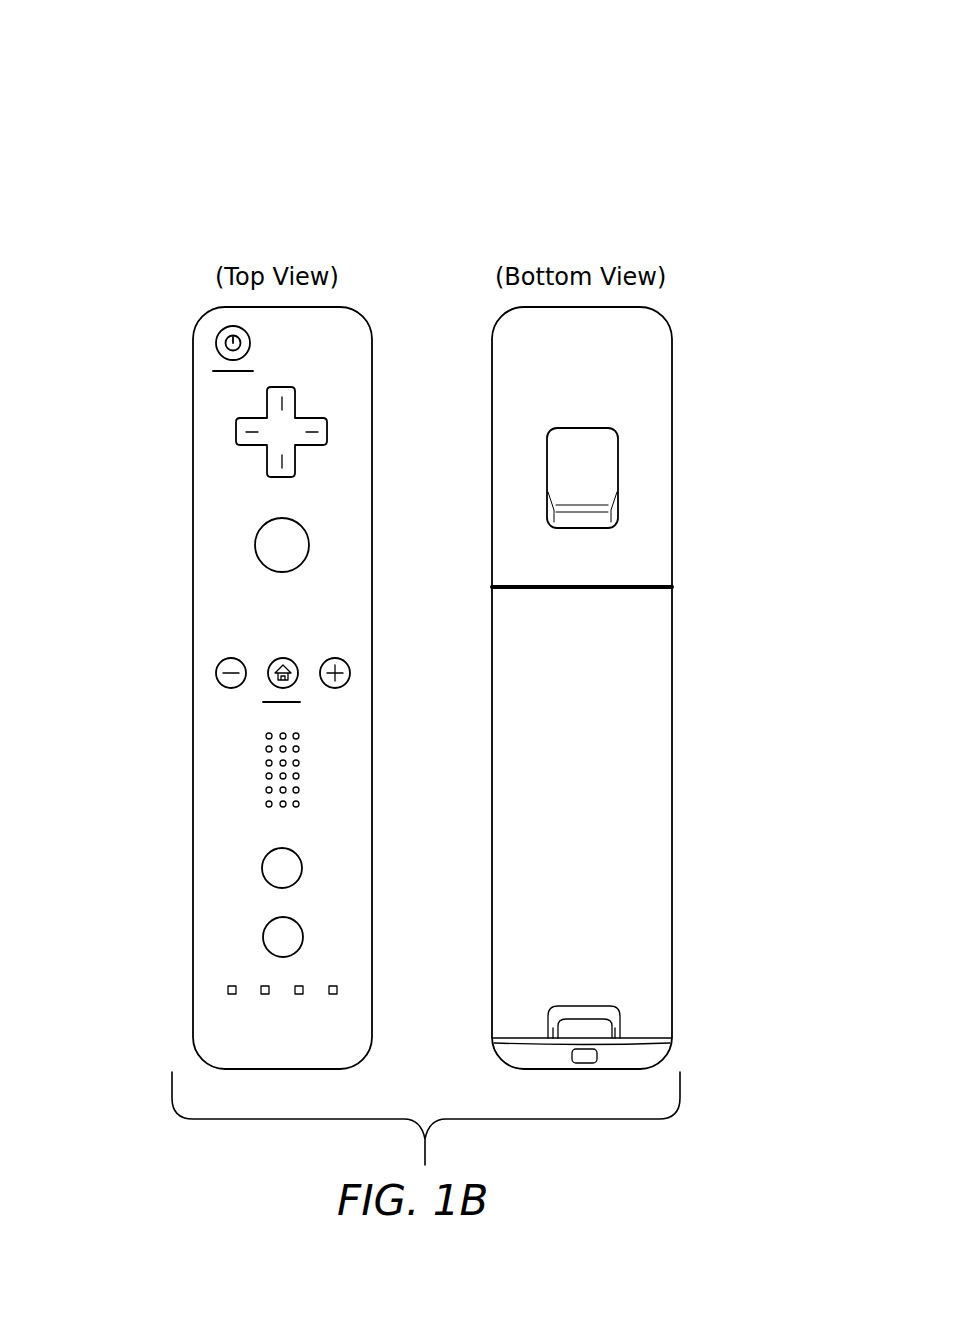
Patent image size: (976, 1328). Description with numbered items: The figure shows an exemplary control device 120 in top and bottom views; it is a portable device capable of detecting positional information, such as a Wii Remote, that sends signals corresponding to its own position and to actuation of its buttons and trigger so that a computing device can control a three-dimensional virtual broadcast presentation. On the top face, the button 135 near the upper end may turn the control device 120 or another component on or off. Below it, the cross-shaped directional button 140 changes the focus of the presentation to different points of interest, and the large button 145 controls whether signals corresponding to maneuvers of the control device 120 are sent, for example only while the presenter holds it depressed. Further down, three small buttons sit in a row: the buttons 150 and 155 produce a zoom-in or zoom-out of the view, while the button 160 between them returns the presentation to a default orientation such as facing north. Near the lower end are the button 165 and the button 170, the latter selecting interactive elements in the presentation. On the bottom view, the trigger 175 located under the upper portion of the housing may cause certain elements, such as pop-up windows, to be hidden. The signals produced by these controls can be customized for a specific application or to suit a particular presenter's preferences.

The control device 120 is at (148, 155).
The button 135 is at (216, 343).
The directional button 140 is at (237, 420).
The button 145 is at (258, 528).
The button 150 is at (325, 662).
The button 155 is at (221, 683).
The button 160 is at (272, 662).
The button 165 is at (268, 855).
The button 170 is at (270, 923).
The trigger 175 is at (604, 467).